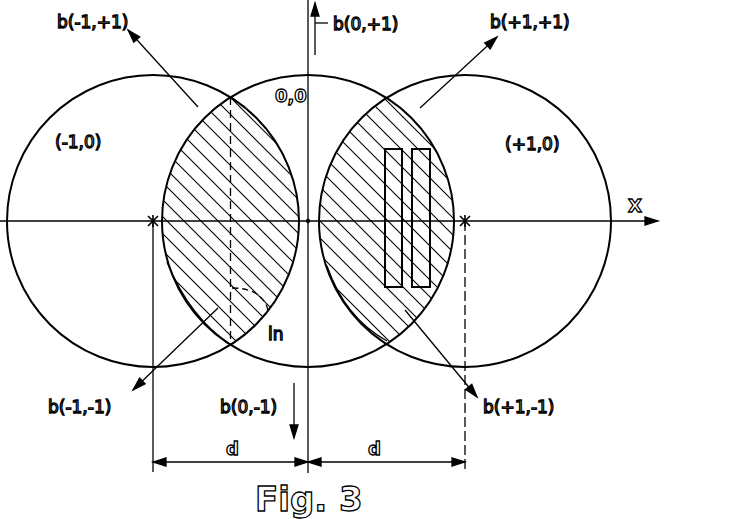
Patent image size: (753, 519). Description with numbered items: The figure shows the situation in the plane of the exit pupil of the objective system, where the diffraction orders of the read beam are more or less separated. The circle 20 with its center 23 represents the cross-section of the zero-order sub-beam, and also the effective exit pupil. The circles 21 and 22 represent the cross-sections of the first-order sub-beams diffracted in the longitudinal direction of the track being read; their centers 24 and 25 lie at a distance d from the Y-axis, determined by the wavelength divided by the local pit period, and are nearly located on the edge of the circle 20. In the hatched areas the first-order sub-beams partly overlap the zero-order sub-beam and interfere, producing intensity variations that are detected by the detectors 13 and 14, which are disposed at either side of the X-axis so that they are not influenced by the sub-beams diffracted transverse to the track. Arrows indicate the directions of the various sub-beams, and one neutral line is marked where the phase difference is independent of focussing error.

The detector 13 is at (413, 316).
The detector 14 is at (430, 284).
The circle 20 is at (276, 366).
The circle 21 is at (515, 358).
The circle 22 is at (45, 330).
The center 23 is at (310, 225).
The center 24 is at (465, 221).
The center 25 is at (153, 221).